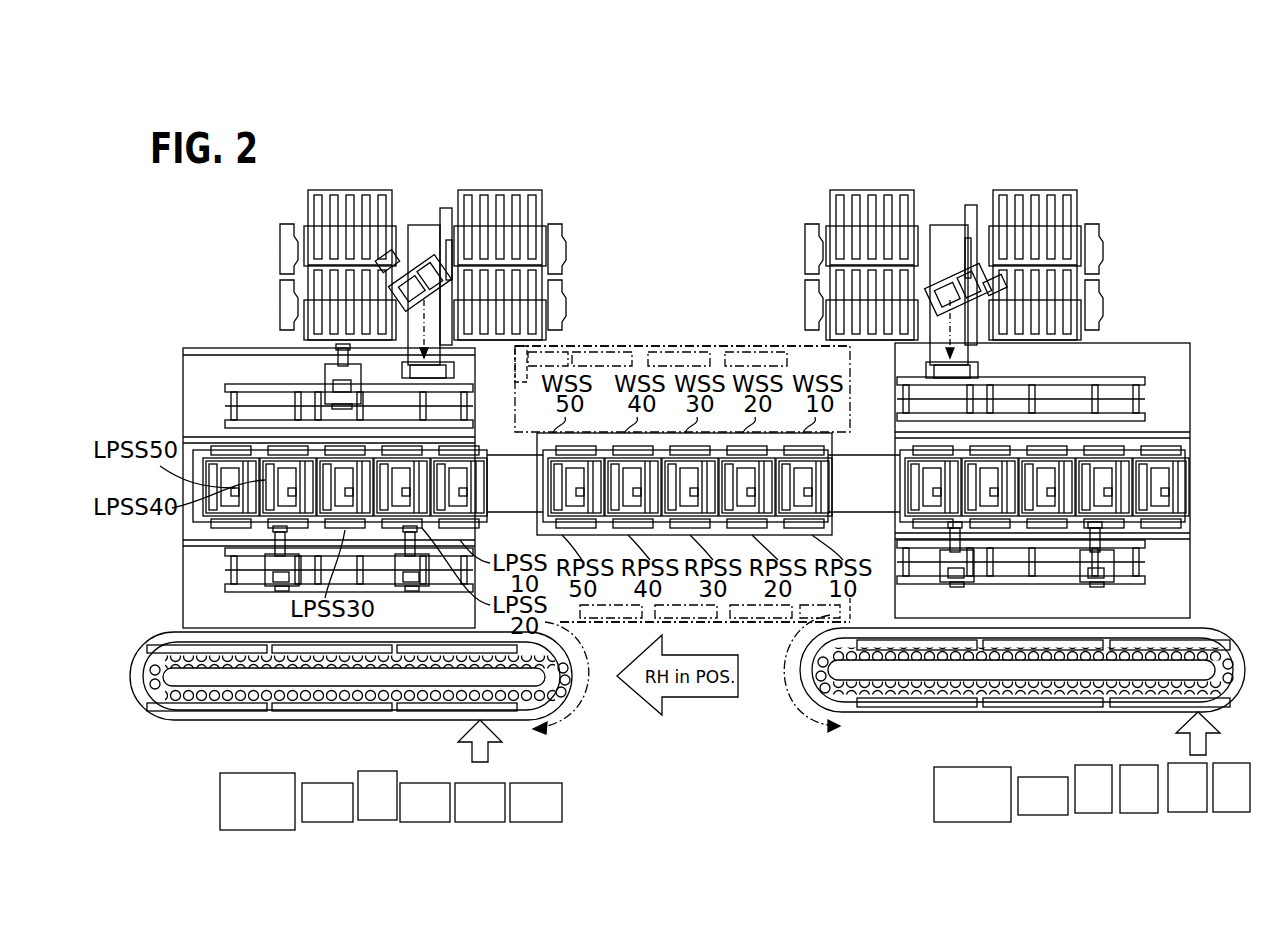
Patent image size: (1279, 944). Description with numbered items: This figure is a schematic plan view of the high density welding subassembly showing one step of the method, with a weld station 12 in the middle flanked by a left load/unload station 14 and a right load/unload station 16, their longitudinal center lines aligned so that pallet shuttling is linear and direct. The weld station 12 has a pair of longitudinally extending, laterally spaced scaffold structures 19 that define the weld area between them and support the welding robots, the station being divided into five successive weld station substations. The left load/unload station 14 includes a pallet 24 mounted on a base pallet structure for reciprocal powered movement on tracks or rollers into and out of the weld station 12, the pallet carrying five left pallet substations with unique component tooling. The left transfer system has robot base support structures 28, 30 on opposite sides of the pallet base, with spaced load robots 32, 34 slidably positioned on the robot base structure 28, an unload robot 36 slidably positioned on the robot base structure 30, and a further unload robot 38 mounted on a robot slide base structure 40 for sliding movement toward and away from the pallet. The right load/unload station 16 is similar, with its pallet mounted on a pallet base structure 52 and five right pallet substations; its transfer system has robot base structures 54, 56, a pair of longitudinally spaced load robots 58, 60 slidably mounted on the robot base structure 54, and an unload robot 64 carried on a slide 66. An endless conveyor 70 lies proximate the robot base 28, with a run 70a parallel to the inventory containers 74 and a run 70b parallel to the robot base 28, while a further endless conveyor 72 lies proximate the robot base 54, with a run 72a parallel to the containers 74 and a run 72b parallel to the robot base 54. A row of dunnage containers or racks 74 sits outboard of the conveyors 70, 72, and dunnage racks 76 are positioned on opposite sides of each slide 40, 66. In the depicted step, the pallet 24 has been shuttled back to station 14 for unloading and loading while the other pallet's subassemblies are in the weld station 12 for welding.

The weld station 12 is at (668, 333).
The left load/unload station 14 is at (178, 380).
The right load/unload station 16 is at (1200, 403).
The scaffold structure 19 is at (728, 346).
The pallet 24 is at (200, 523).
The robot base support structure 28 is at (228, 565).
The robot base support structure 30 is at (225, 398).
The load robot 32 is at (280, 586).
The load robot 34 is at (410, 586).
The unload robot 36 is at (338, 366).
The unload robot 38 is at (430, 262).
The robot slide base structure 40 is at (452, 355).
The pallet base structure 52 is at (1193, 480).
The robot base structure 54 is at (1150, 560).
The robot base structure 56 is at (1142, 400).
The load robot 58 is at (952, 582).
The load robot 60 is at (1094, 582).
The unload robot 64 is at (960, 270).
The slide 66 is at (895, 340).
The endless conveyor 70 is at (126, 692).
The run 70a is at (300, 718).
The run 70b is at (160, 642).
The endless conveyor 72 is at (1244, 670).
The run 72a is at (935, 712).
The run 72b is at (1205, 632).
The dunnage containers or racks 74 is at (248, 843).
The dunnage racks 76 is at (360, 190).